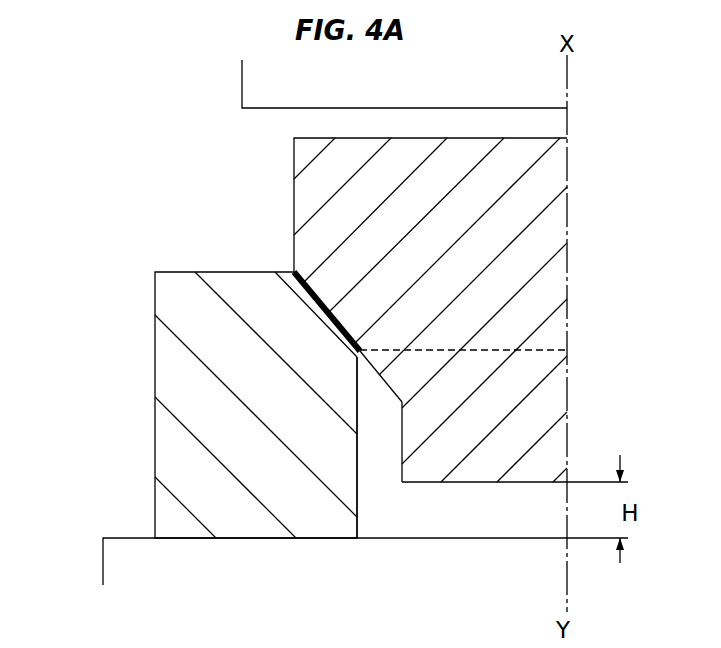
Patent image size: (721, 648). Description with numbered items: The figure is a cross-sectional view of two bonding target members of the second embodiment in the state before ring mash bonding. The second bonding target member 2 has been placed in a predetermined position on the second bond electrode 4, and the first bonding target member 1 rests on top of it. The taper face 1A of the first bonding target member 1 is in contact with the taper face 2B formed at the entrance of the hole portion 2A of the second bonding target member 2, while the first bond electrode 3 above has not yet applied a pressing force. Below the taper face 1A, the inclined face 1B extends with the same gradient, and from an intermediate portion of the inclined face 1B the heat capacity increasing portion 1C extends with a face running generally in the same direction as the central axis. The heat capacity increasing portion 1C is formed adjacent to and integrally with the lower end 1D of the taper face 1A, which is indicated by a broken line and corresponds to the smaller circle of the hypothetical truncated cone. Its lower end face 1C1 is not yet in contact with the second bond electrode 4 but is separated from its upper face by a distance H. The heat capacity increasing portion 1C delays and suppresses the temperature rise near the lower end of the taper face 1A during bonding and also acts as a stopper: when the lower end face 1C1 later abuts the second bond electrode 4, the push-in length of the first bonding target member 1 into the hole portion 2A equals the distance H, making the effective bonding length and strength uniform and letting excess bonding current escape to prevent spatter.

The first bonding target member 1 is at (456, 371).
The taper face 1A is at (305, 290).
The inclined face 1B is at (383, 383).
The heat capacity increasing portion 1C is at (542, 398).
The lower end face 1C1 is at (488, 482).
The lower end 1D is at (508, 345).
The second bonding target member 2 is at (259, 392).
The hole portion 2A is at (377, 500).
The taper face 2B is at (310, 306).
The first bond electrode 3 is at (242, 78).
The second bond electrode 4 is at (103, 568).